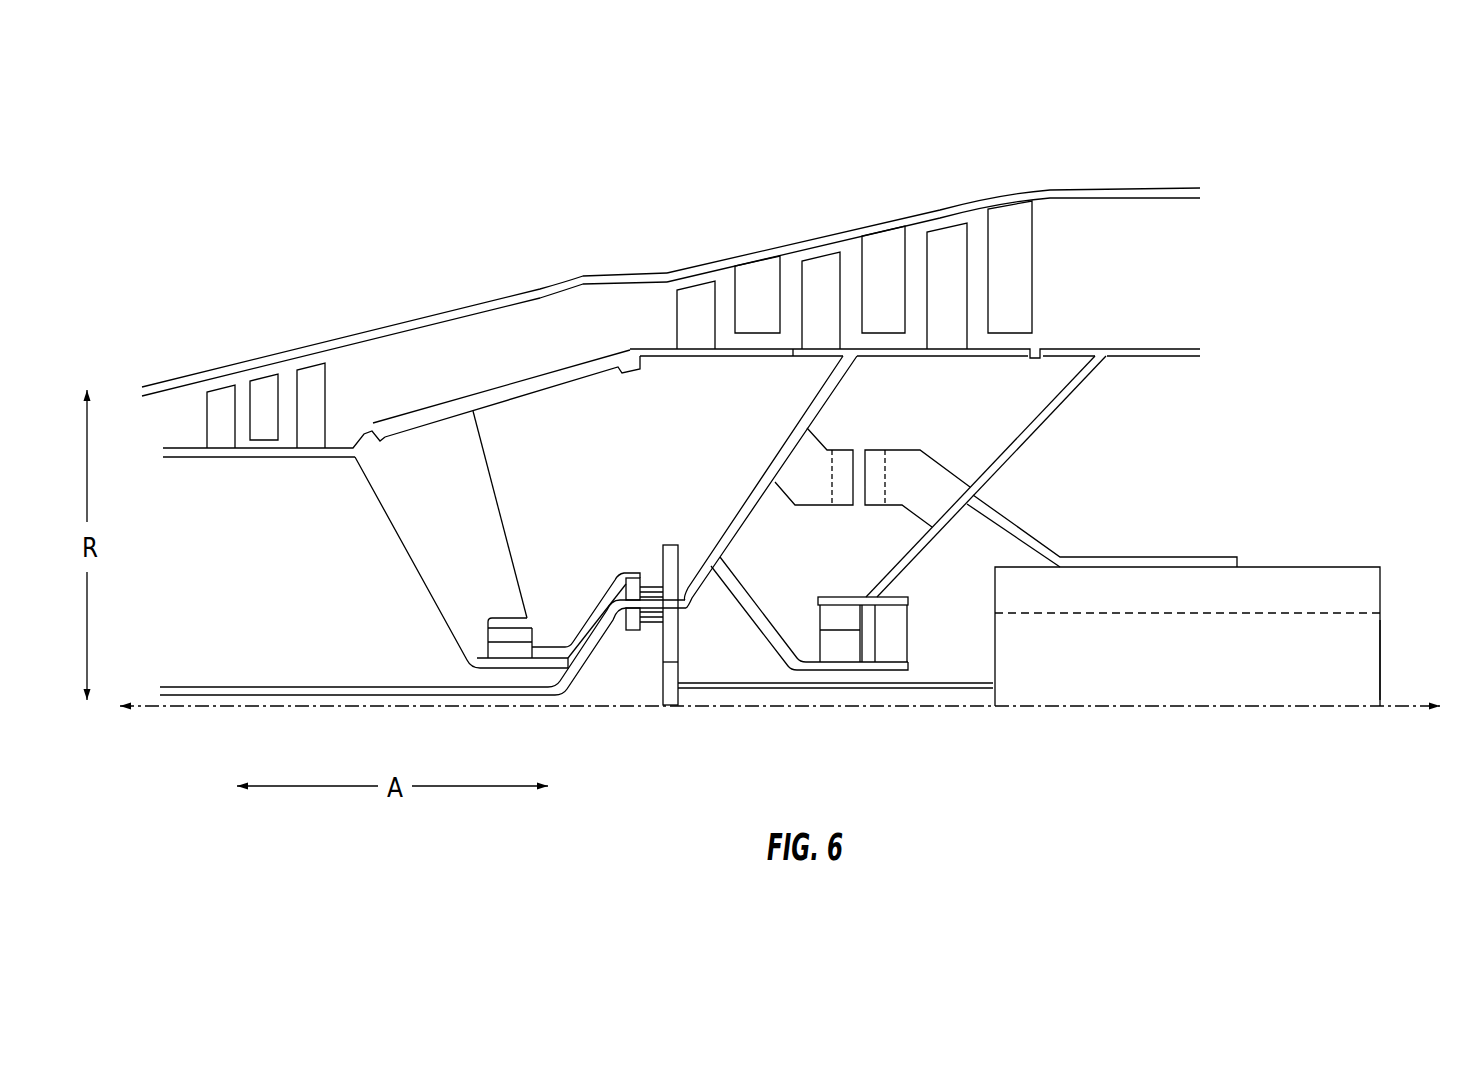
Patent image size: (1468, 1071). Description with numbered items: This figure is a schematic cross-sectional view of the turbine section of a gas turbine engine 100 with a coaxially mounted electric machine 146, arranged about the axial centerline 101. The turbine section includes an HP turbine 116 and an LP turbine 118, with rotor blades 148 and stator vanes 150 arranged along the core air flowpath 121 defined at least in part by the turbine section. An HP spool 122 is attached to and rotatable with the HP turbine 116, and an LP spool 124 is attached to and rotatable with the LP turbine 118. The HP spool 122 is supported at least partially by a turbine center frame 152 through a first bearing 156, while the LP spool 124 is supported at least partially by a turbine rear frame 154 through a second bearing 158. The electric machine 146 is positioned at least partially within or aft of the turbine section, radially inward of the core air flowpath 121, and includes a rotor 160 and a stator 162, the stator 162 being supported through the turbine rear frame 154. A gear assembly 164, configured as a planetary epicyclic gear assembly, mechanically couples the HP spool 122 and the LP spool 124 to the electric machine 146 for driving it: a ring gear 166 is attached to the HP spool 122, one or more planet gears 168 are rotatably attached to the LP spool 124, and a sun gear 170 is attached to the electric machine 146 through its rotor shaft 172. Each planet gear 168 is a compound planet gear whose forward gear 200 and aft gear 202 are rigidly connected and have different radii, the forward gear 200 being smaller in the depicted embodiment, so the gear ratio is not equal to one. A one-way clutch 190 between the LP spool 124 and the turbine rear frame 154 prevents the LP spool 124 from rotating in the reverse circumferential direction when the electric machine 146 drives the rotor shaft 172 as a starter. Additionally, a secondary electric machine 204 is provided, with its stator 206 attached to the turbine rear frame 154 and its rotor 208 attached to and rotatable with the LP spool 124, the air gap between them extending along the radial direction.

The gas turbine engine 100 is at (1218, 147).
The axial centerline 101 is at (1362, 705).
The HP turbine 116 is at (338, 330).
The LP turbine 118 is at (1003, 175).
The core air flowpath 121 is at (437, 375).
The HP spool 122 is at (378, 494).
The LP spool 124 is at (737, 517).
The electric machine 146 is at (1298, 560).
The rotor blade 148 is at (217, 410).
The stator vane 150 is at (258, 393).
The turbine center frame 152 is at (513, 372).
The turbine rear frame 154 is at (1030, 487).
The first bearing 156 is at (525, 636).
The second bearing 158 is at (838, 616).
The rotor 160 is at (1365, 660).
The stator 162 is at (1365, 590).
The gear assembly 164 is at (642, 437).
The ring gear 166 is at (623, 580).
The planet gear 168 is at (639, 533).
The sun gear 170 is at (660, 692).
The rotor shaft 172 is at (771, 690).
The one-way clutch 190 is at (890, 629).
The forward gear 200 is at (632, 622).
The aft gear 202 is at (678, 628).
The secondary electric machine 204 is at (942, 420).
The stator 206 is at (878, 458).
The rotor 208 is at (842, 458).